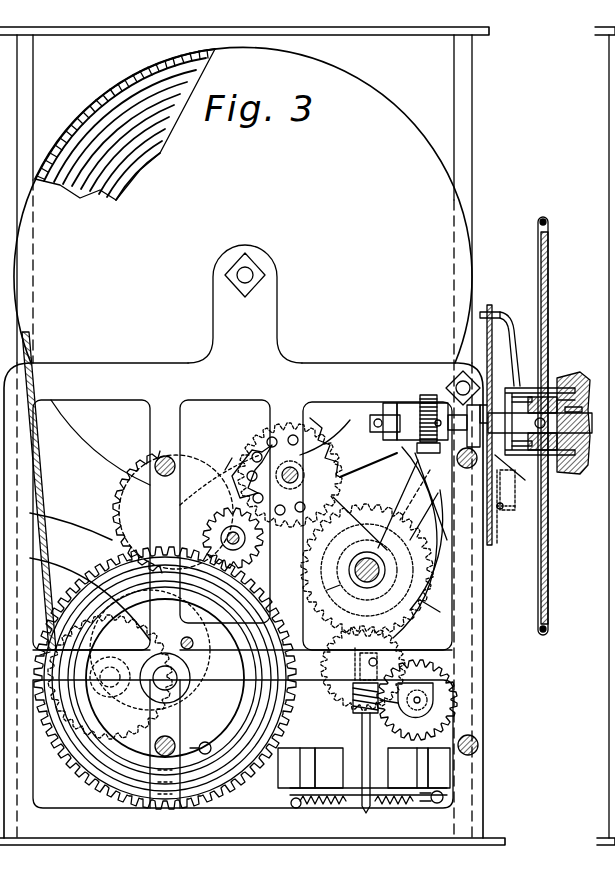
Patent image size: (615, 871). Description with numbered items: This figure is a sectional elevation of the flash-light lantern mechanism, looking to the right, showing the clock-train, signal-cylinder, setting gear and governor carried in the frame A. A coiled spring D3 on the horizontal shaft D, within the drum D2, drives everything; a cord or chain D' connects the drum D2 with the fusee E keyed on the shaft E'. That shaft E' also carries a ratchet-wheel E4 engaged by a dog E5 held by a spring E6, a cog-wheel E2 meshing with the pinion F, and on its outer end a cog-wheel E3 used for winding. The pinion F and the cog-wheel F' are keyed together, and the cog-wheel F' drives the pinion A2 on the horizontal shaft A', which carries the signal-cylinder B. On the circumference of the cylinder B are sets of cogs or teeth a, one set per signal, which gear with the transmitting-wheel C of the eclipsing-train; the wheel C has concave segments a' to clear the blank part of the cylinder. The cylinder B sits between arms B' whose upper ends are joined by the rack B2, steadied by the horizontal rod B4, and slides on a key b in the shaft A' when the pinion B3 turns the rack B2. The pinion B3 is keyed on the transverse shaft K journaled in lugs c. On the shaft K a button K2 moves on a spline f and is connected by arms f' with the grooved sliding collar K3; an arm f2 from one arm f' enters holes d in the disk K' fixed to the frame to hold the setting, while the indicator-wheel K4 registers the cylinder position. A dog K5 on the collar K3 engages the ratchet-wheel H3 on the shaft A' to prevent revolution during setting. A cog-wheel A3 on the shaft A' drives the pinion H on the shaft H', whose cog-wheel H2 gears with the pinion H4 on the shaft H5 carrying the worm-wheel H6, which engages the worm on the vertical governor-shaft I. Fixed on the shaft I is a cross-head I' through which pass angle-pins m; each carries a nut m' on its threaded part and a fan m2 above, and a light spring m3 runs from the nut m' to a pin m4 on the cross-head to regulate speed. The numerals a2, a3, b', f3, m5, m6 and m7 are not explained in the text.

The horizontal shaft D is at (245, 304).
The cord or chain D' is at (86, 491).
The drum D2 is at (340, 172).
The coiled spring D3 is at (162, 136).
The transmitting-wheel C is at (312, 450).
The lugs c is at (385, 423).
The cogs or teeth a is at (314, 481).
The concave segment a' is at (286, 459).
The pawl link a2 is at (242, 482).
The lever arc a3 is at (430, 512).
The signal-cylinder B is at (385, 505).
The arms B' is at (425, 438).
The rack B2 is at (422, 428).
The pinion B3 is at (420, 410).
The horizontal rod B4 is at (420, 542).
The key b is at (415, 502).
The stud block b' is at (431, 461).
The frame A is at (367, 570).
The horizontal shaft A' is at (360, 584).
The pinion A2 is at (425, 628).
The cog-wheel A3 is at (420, 600).
The pinion H is at (360, 607).
The shaft H' is at (417, 683).
The cog-wheel H2 is at (425, 646).
The ratchet-wheel H3 is at (376, 664).
The pinion H4 is at (425, 700).
The shaft H5 is at (428, 716).
The worm-wheel H6 is at (414, 710).
The fusee E is at (165, 678).
The shaft E' is at (152, 650).
The cog-wheel E2 is at (108, 586).
The cog-wheel E3 is at (208, 742).
The ratchet-wheel E4 is at (112, 700).
The dog E5 is at (124, 697).
The spring E6 is at (80, 780).
The pinion F is at (240, 538).
The cog-wheel F' is at (175, 483).
The vertical governor-shaft I is at (359, 701).
The cross-head I' is at (359, 763).
The transverse shaft K is at (540, 423).
The disk K' is at (494, 414).
The button K2 is at (576, 366).
The grooved sliding collar K3 is at (516, 456).
The indicator or registering-wheel K4 is at (556, 264).
The dog K5 is at (506, 489).
The spline f is at (534, 421).
The arms f' is at (565, 383).
The arm f2 is at (514, 348).
The link f3 is at (511, 468).
The holes d is at (489, 534).
The angle-pin m is at (382, 768).
The nut m' is at (296, 768).
The fan m2 is at (408, 768).
The light spring m3 is at (322, 808).
The pin m4 is at (352, 800).
The spring m5 is at (394, 808).
The pivot m6 is at (284, 806).
The pivot m7 is at (436, 806).